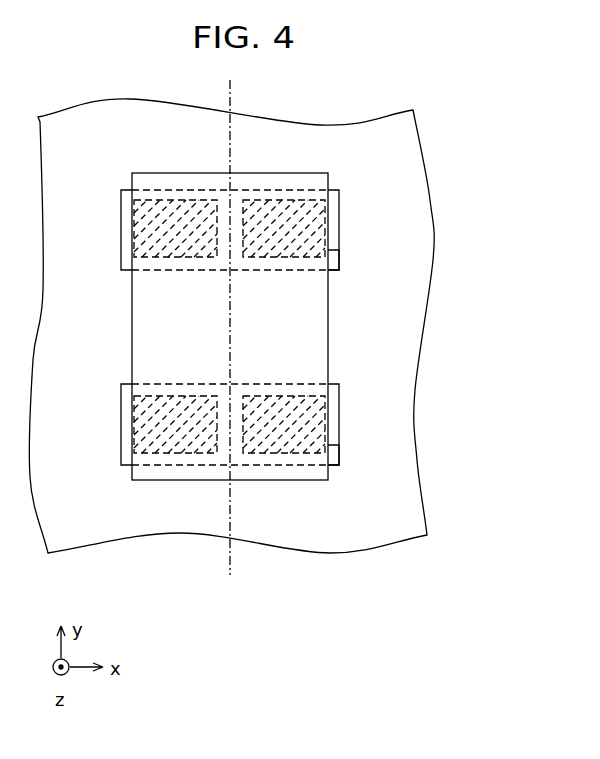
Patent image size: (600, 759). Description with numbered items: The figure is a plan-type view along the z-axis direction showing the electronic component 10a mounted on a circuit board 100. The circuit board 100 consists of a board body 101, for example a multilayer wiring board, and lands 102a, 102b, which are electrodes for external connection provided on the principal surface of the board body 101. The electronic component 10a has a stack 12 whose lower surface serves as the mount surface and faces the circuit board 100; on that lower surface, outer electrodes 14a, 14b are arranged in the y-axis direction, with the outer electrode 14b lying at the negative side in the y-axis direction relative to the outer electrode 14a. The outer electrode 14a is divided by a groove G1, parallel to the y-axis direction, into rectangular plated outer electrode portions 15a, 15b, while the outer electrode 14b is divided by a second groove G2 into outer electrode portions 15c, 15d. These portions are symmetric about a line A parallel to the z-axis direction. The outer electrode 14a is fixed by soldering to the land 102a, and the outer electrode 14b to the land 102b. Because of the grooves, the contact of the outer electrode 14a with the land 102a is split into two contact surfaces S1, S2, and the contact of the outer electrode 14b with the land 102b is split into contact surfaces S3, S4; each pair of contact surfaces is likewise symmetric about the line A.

The circuit board 100 is at (446, 235).
The board body 101 is at (433, 270).
The electronic component 10a is at (108, 333).
The stack 12 is at (132, 362).
The outer electrode 14a is at (345, 287).
The outer electrode 14b is at (345, 469).
The outer electrode portion 15a is at (176, 258).
The outer electrode portion 15b is at (284, 258).
The outer electrode portion 15c is at (176, 395).
The outer electrode portion 15d is at (284, 395).
The land 102a is at (339, 229).
The land 102b is at (339, 395).
The contact surface S1 is at (176, 199).
The contact surface S2 is at (284, 199).
The contact surface S3 is at (176, 455).
The contact surface S4 is at (284, 455).
The groove G1 is at (231, 154).
The groove G2 is at (231, 336).
The line A is at (233, 345).